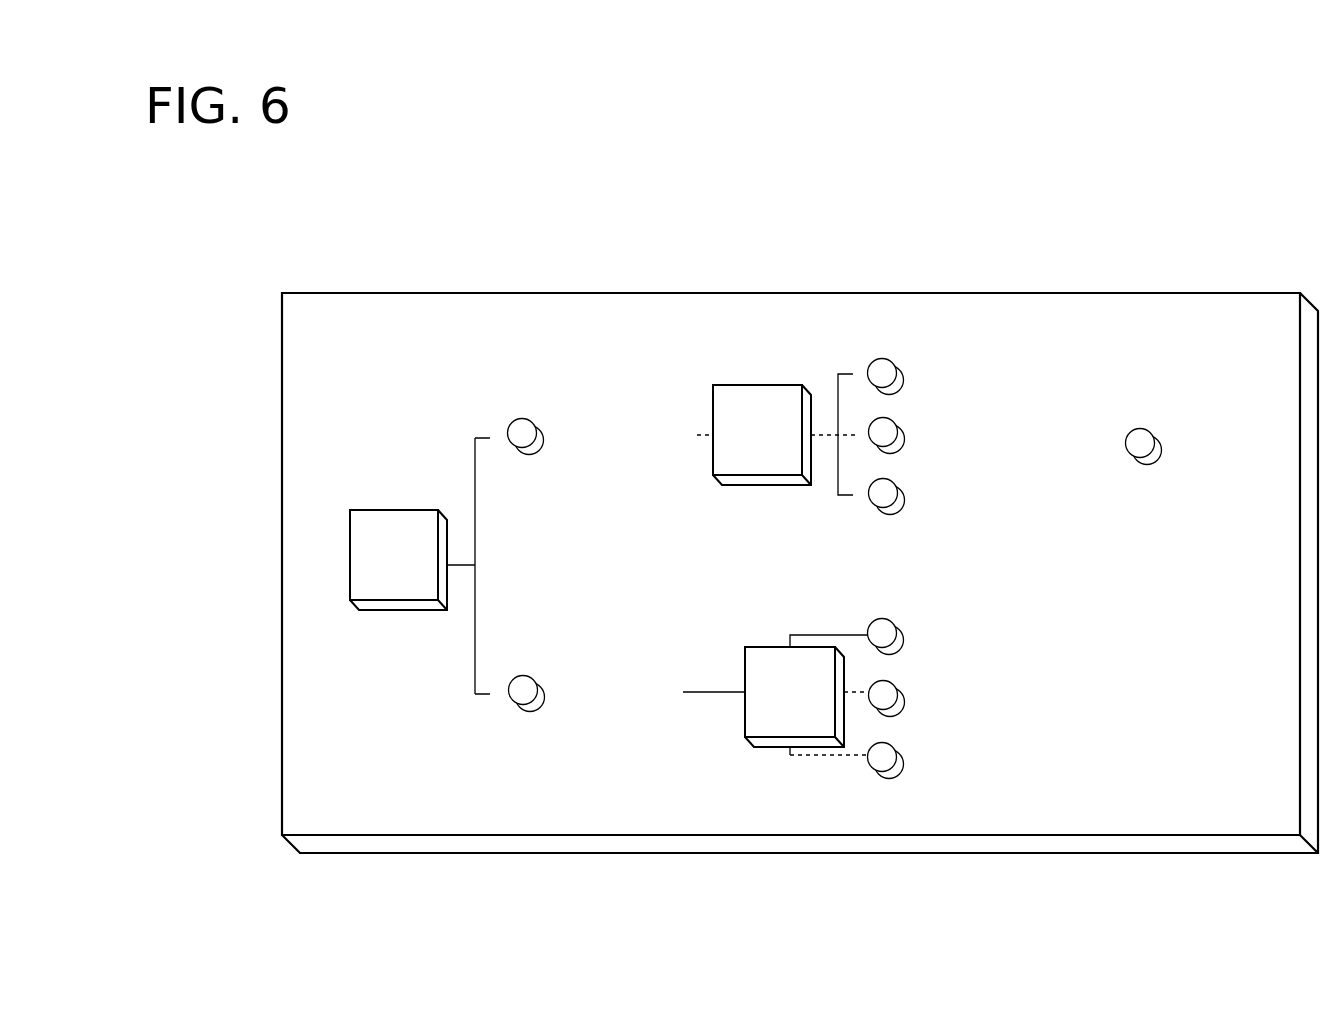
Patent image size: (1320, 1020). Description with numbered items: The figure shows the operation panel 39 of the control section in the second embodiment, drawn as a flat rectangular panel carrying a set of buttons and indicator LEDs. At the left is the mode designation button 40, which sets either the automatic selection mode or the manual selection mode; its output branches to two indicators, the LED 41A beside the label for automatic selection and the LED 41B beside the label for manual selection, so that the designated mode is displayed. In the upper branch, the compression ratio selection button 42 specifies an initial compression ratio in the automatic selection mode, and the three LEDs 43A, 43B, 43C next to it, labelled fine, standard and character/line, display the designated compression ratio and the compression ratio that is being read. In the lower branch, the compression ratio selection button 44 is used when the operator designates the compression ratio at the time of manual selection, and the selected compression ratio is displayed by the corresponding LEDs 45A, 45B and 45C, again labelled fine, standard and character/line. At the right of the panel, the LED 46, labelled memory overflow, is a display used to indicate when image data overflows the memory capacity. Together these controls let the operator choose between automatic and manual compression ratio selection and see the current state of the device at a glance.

The operation panel 39 is at (403, 293).
The mode designation button 40 is at (393, 510).
The LED 41A is at (521, 418).
The LED 41B is at (517, 705).
The compression ratio selection button 42 is at (753, 400).
The LED 43A is at (883, 358).
The LED 43B is at (895, 422).
The LED 43C is at (873, 505).
The compression ratio selection button 44 is at (757, 714).
The LED 45A is at (884, 620).
The LED 45B is at (896, 690).
The LED 45C is at (872, 766).
The LED 46 is at (1141, 428).